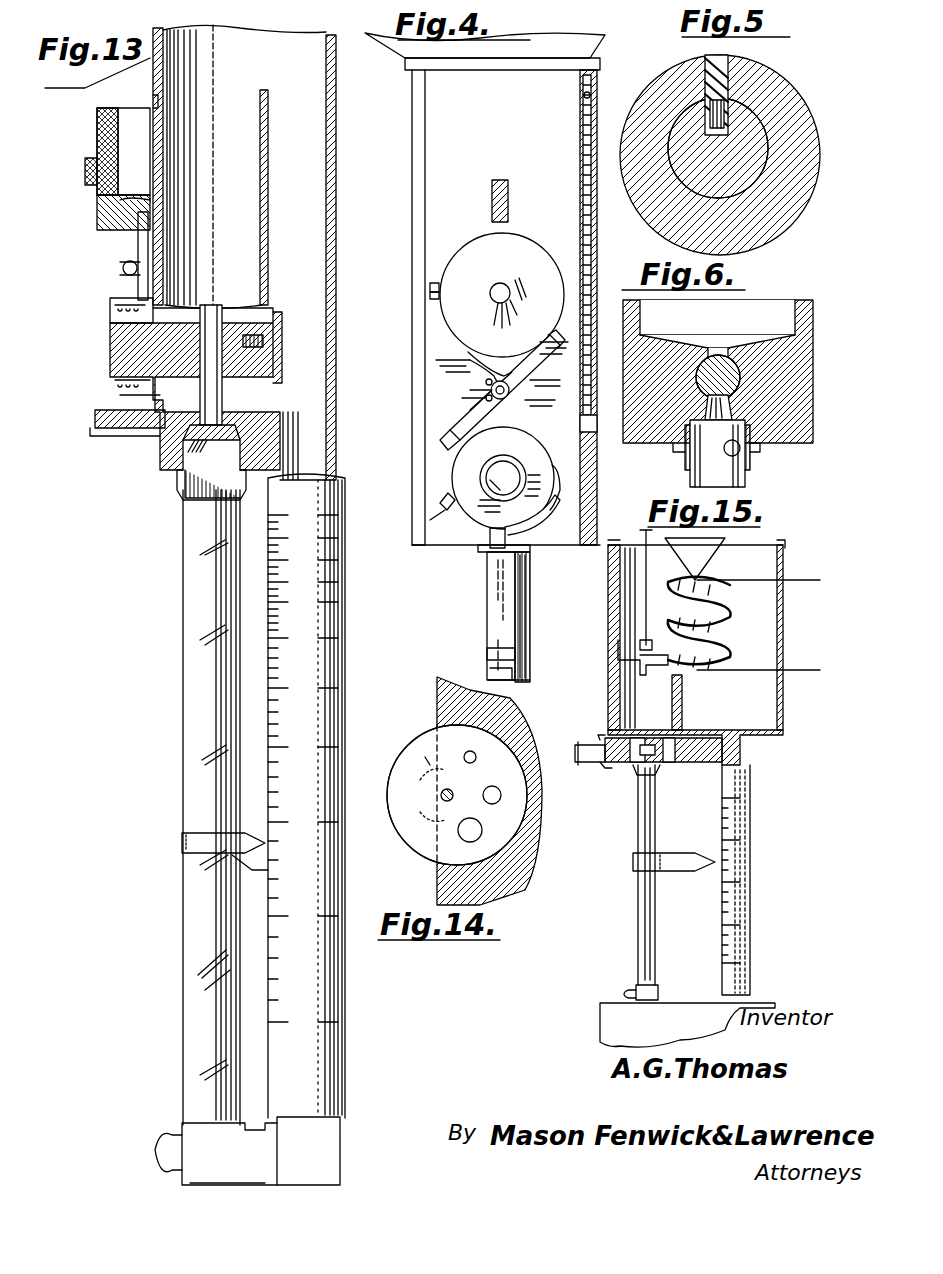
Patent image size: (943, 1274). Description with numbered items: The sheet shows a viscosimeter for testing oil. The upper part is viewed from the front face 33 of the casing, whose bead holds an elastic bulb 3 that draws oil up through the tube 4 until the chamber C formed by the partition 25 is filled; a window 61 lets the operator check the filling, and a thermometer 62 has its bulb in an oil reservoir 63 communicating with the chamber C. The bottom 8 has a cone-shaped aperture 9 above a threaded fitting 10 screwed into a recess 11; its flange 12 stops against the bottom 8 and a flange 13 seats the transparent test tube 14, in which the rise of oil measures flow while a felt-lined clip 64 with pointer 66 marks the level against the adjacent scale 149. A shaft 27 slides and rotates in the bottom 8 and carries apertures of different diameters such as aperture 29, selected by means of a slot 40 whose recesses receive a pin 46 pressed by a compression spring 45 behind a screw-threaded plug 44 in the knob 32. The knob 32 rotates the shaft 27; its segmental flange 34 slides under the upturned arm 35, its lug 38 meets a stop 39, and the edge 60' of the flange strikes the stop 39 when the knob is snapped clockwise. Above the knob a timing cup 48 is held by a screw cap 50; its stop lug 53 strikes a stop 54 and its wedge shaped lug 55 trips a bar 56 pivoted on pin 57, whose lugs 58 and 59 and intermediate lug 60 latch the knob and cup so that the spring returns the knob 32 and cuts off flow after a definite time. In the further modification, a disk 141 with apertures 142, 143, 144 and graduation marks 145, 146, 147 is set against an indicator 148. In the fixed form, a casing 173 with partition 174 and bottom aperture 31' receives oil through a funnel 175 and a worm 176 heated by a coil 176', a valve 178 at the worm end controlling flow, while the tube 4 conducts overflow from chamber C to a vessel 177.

In FIG. 4, the elastic bulb 3 is at (590, 45).
In FIG. 15, the tube 4 is at (740, 812).
In FIG. 6, the bottom 8 is at (640, 365).
In FIG. 6, the aperture 9 is at (705, 405).
In FIG. 6, the fitting 10 is at (748, 433).
In FIG. 6, the recess 11 is at (748, 468).
In FIG. 6, the flange 12 is at (680, 450).
In FIG. 6, the flange 13 is at (750, 455).
In FIG. 13, the transparent test tube 14 is at (88, 422).
In FIG. 4, the transparent test tube 14 is at (490, 602).
In FIG. 6, the transparent test tube 14 is at (692, 476).
In FIG. 15, the transparent test tube 14 is at (640, 876).
In FIG. 6, the partition 25 is at (778, 315).
In FIG. 4, the shaft 27 is at (515, 490).
In FIG. 5, the shaft 27 is at (740, 190).
In FIG. 15, the shaft 27 is at (635, 765).
In FIG. 6, the aperture 29 is at (722, 355).
In FIG. 15, the aperture 31' is at (694, 727).
In FIG. 4, the knob 32 is at (455, 471).
In FIG. 5, the knob 32 is at (782, 102).
In FIG. 4, the front face 33 is at (432, 133).
In FIG. 4, the segmental flange 34 is at (557, 468).
In FIG. 4, the upturned arm 35 is at (530, 560).
In FIG. 4, the lug 38 is at (455, 503).
In FIG. 4, the stop 39 is at (442, 505).
In FIG. 5, the slot 40 is at (716, 120).
In FIG. 5, the screw-threaded plug 44 is at (705, 65).
In FIG. 5, the compression spring 45 is at (728, 80).
In FIG. 5, the pin 46 is at (715, 108).
In FIG. 13, the cylindrical cup 48 is at (123, 120).
In FIG. 4, the cylindrical cup 48 is at (520, 255).
In FIG. 13, the screw cap 50 is at (86, 180).
In FIG. 4, the screw cap 50 is at (507, 272).
In FIG. 4, the stop lug 53 is at (430, 297).
In FIG. 4, the stop 54 is at (437, 283).
In FIG. 13, the wedge shaped lug 55 is at (97, 202).
In FIG. 4, the wedge shaped lug 55 is at (551, 335).
In FIG. 13, the bar 56 is at (138, 243).
In FIG. 4, the bar 56 is at (468, 410).
In FIG. 13, the pivot pin 57 is at (122, 272).
In FIG. 4, the pivot pin 57 is at (512, 390).
In FIG. 4, the lug 58 is at (448, 445).
In FIG. 4, the lug 59 is at (560, 340).
In FIG. 4, the intermediate lug 60 is at (502, 370).
In FIG. 4, the edge 60' is at (491, 546).
In FIG. 13, the window 61 is at (155, 98).
In FIG. 4, the window 61 is at (510, 198).
In FIG. 15, the window 61 is at (612, 648).
In FIG. 4, the thermometer 62 is at (590, 228).
In FIG. 4, the oil reservoir 63 is at (590, 432).
In FIG. 13, the clip 64 is at (182, 845).
In FIG. 15, the clip 64 is at (633, 858).
In FIG. 13, the pointer 66 is at (228, 860).
In FIG. 13, the disk 141 is at (138, 440).
In FIG. 14, the disk 141 is at (395, 823).
In FIG. 14, the aperture 142 is at (473, 753).
In FIG. 14, the aperture 143 is at (500, 795).
In FIG. 14, the aperture 144 is at (480, 830).
In FIG. 14, the graduation mark 145 is at (428, 762).
In FIG. 14, the graduation mark 146 is at (405, 796).
In FIG. 14, the graduation mark 147 is at (425, 845).
In FIG. 13, the indicator 148 is at (95, 428).
In FIG. 13, the mileage scale 149 is at (340, 567).
In FIG. 15, the casing 173 is at (783, 632).
In FIG. 15, the partition 174 is at (682, 702).
In FIG. 15, the funnel 175 is at (705, 542).
In FIG. 15, the worm 176 is at (744, 623).
In FIG. 15, the coil 176' is at (621, 596).
In FIG. 15, the vessel 177 is at (605, 1020).
In FIG. 15, the valve 178 is at (640, 655).
In FIG. 15, the chamber C is at (670, 685).